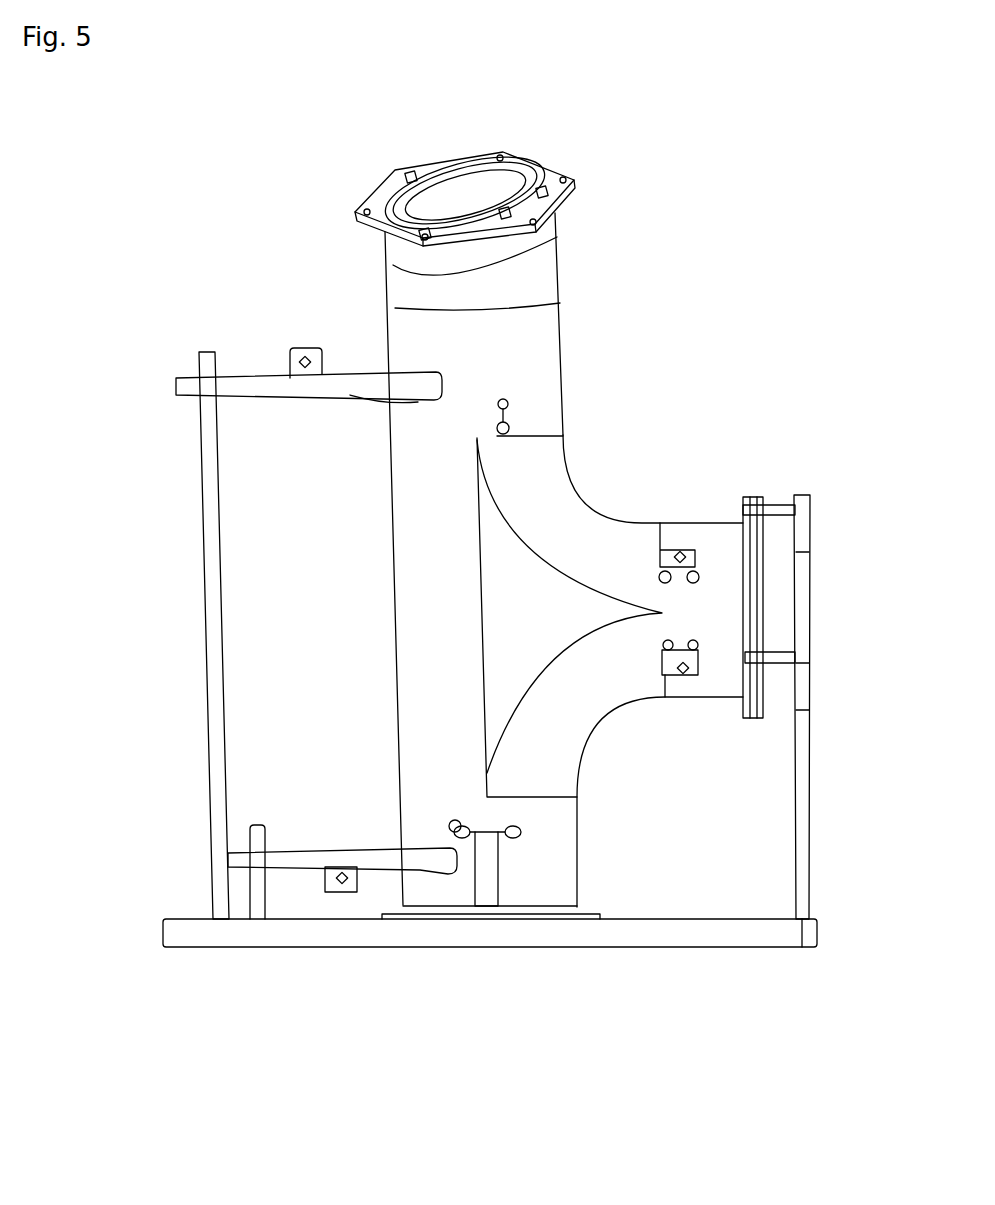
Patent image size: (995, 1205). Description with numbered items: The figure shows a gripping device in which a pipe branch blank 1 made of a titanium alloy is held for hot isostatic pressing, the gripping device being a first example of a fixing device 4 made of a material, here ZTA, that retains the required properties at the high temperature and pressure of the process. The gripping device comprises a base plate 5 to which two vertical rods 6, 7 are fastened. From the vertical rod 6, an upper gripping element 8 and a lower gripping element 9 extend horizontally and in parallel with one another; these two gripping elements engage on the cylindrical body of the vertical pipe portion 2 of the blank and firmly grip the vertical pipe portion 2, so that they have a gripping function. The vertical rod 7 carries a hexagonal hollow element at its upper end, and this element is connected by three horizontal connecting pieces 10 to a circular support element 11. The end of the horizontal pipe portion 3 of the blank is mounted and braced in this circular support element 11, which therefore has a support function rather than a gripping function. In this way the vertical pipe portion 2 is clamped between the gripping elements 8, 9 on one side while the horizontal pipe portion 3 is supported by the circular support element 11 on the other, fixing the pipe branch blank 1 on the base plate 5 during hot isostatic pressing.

The pipe branch blank 1 is at (509, 525).
The vertical pipe portion 2 is at (418, 337).
The horizontal pipe portion 3 is at (592, 545).
The fixing device 4 is at (451, 686).
The base plate 5 is at (577, 931).
The vertical rod 6 is at (212, 532).
The vertical rod 7 is at (802, 848).
The upper gripping element 8 is at (292, 385).
The lower gripping element 9 is at (292, 860).
The horizontal connecting pieces 10 is at (770, 505).
The circular support element 11 is at (763, 710).